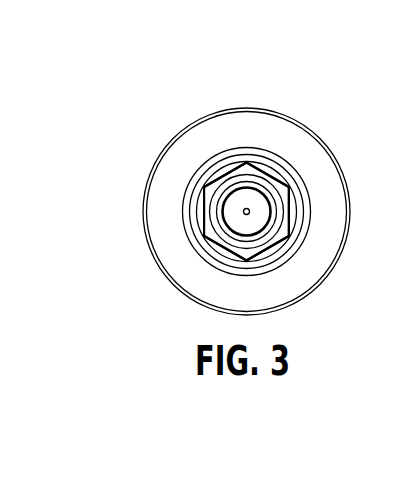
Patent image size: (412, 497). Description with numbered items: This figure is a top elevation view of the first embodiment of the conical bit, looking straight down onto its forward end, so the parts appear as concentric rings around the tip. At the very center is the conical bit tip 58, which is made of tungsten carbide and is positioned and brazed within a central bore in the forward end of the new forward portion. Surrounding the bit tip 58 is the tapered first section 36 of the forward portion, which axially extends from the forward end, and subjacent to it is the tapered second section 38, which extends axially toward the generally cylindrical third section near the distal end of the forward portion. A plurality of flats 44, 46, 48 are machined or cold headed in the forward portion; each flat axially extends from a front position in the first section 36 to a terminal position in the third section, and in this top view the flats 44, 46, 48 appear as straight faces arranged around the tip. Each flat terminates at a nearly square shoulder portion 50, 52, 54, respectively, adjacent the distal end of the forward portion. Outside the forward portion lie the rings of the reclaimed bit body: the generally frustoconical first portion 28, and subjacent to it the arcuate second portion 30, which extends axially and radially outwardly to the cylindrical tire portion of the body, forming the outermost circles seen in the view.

The first portion 28 is at (230, 157).
The second portion 30 is at (257, 125).
The first section 36 is at (223, 240).
The second section 38 is at (201, 200).
The flat 44 is at (263, 250).
The flat 46 is at (275, 175).
The flat 48 is at (207, 173).
The shoulder portion 50 is at (276, 254).
The shoulder portion 52 is at (262, 168).
The shoulder portion 54 is at (200, 213).
The conical bit tip 58 is at (254, 211).